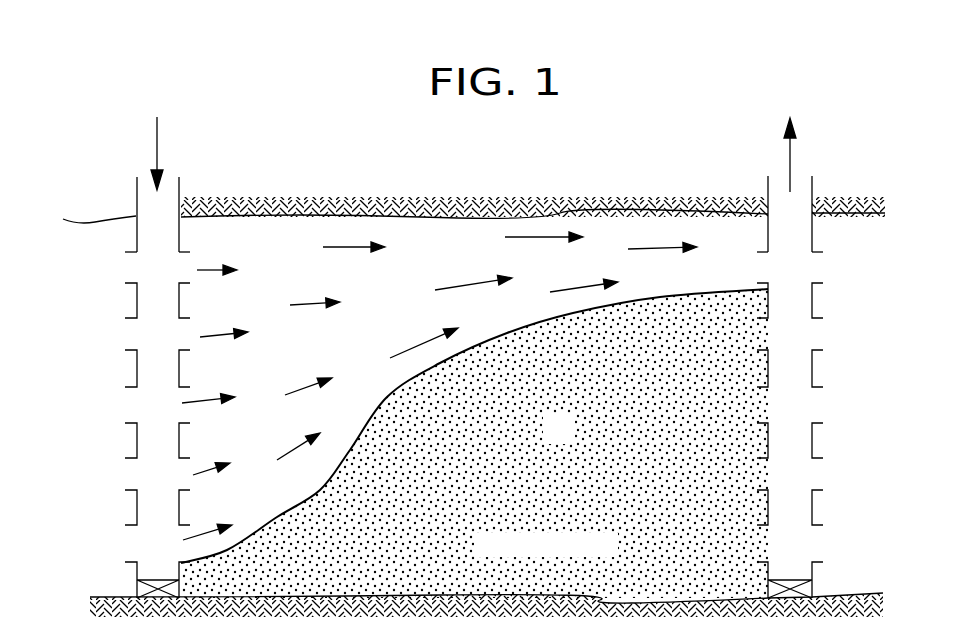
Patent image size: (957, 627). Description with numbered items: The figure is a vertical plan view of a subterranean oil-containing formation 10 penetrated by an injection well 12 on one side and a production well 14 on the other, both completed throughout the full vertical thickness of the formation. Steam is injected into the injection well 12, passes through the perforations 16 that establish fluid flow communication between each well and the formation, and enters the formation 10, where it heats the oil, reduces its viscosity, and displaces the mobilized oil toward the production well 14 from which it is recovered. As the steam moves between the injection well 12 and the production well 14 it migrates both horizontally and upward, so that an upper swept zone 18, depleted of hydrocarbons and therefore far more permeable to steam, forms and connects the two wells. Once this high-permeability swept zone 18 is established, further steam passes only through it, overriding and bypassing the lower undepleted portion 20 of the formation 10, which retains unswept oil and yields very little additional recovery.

The oil-containing formation 10 is at (58, 472).
The injection well 12 is at (181, 186).
The production well 14 is at (768, 181).
The perforations 16 is at (130, 405).
The swept zone 18 is at (438, 227).
The lower undepleted portion 20 is at (572, 441).